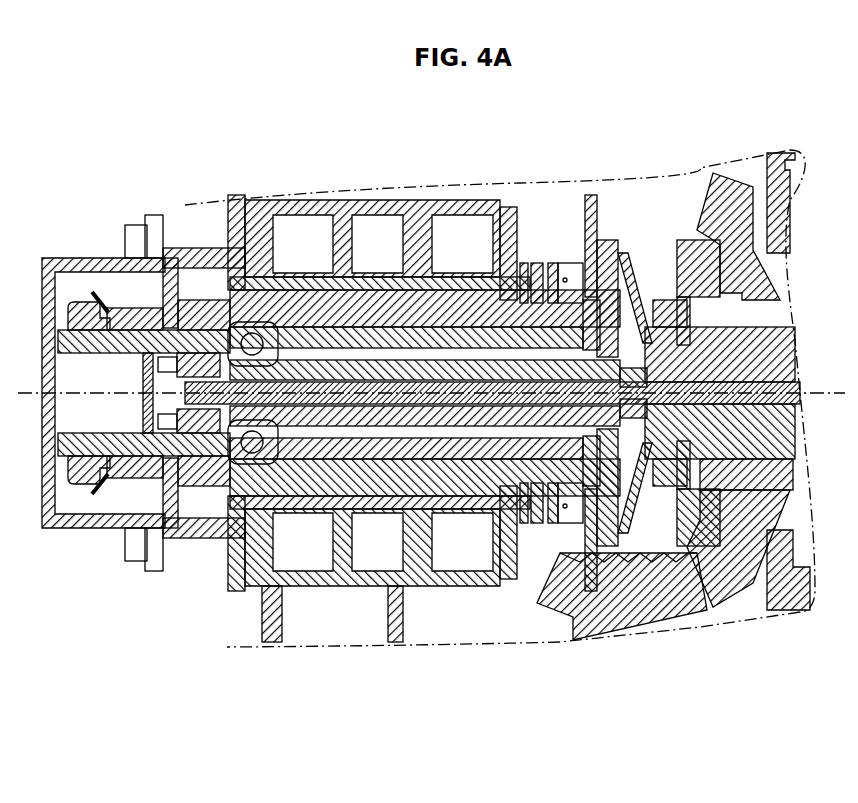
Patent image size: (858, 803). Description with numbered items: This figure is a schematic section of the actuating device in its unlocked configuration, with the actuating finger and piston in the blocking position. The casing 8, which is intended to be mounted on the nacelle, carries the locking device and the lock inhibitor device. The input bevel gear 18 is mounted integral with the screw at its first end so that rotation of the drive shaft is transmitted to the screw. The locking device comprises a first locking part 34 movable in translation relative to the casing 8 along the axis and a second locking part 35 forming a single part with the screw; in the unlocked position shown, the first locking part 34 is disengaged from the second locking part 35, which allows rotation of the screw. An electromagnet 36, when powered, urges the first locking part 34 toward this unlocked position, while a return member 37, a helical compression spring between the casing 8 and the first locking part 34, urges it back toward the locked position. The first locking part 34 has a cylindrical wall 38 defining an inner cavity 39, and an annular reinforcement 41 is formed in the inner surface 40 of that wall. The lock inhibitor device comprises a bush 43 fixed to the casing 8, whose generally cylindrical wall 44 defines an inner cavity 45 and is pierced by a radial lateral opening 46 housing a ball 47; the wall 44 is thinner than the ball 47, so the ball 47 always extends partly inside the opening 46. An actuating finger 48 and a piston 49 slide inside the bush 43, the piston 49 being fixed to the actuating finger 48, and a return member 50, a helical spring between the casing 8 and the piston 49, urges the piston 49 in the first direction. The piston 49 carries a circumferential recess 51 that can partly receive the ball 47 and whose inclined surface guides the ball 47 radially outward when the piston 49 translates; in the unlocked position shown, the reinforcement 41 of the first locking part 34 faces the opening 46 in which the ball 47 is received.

The casing 8 is at (510, 230).
The input bevel gear 18 is at (723, 197).
The first locking part 34 is at (612, 253).
The second locking part 35 is at (682, 257).
The electromagnet 36 is at (363, 197).
The return member 37 is at (537, 270).
The cylindrical wall 38 is at (423, 307).
The inner cavity 39 is at (345, 330).
The inner surface 40 is at (400, 332).
The annular reinforcement 41 is at (338, 337).
The bush 43 is at (227, 447).
The wall 44 is at (310, 442).
The inner cavity 45 is at (100, 410).
The lateral opening 46 is at (236, 333).
The ball 47 is at (302, 327).
The actuating finger 48 is at (447, 395).
The piston 49 is at (245, 420).
The return member 50 is at (167, 417).
The recess 51 is at (233, 350).